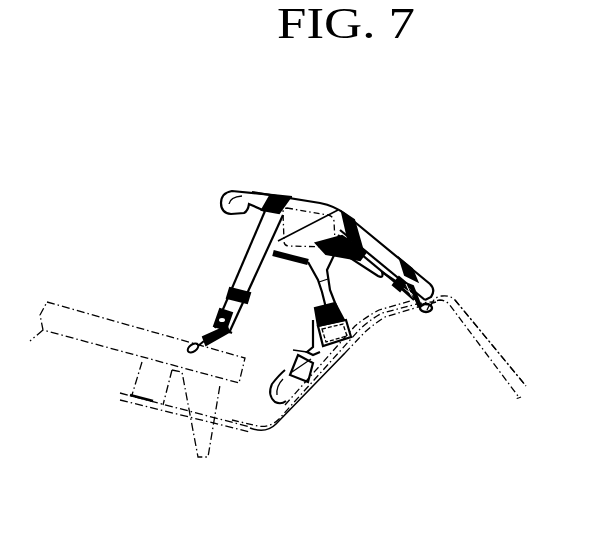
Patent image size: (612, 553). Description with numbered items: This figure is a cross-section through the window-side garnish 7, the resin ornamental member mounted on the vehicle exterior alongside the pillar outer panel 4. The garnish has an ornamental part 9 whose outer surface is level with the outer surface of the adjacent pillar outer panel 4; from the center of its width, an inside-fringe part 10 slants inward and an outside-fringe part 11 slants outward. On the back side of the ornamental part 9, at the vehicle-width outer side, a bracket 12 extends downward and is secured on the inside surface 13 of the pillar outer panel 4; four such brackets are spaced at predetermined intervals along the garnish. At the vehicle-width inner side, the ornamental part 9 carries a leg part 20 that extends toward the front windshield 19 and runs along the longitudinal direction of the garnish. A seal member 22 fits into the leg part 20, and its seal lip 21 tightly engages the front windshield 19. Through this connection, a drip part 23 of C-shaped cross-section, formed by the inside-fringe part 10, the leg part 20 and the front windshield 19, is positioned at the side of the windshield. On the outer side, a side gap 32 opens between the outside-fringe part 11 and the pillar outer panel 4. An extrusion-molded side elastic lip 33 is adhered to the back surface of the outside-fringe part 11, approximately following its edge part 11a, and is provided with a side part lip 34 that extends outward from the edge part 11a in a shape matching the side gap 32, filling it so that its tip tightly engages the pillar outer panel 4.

The window-side garnish 7 is at (323, 201).
The ornamental part 9 is at (346, 215).
The inside-fringe part 10 is at (251, 194).
The outside-fringe part 11 is at (384, 270).
The edge part 11a is at (433, 294).
The bracket 12 is at (343, 333).
The inside surface 13 is at (291, 406).
The front windshield 19 is at (73, 305).
The leg part 20 is at (234, 291).
The seal lip 21 is at (198, 343).
The seal member 22 is at (232, 333).
The drip part 23 is at (226, 254).
The side gap 32 is at (434, 290).
The side elastic lip 33 is at (394, 292).
The side part lip 34 is at (428, 313).
The pillar outer panel 4 is at (498, 354).